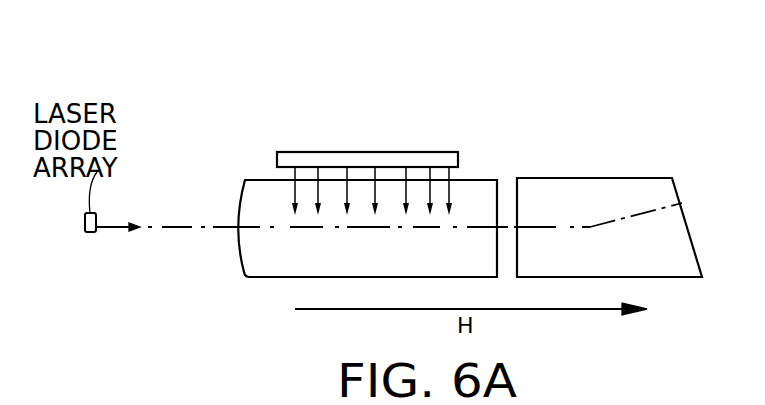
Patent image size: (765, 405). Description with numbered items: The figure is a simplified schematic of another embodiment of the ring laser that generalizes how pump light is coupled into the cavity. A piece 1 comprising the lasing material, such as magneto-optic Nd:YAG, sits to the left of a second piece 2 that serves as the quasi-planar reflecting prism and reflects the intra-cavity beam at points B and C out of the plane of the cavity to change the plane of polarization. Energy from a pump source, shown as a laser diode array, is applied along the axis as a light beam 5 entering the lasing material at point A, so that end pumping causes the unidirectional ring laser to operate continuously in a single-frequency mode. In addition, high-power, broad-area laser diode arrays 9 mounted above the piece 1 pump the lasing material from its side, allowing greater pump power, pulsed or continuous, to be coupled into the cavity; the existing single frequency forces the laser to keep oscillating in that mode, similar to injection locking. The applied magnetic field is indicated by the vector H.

The piece 1 is at (264, 197).
The piece 2 is at (630, 205).
The light beam 5 is at (426, 222).
The laser diode arrays 9 is at (377, 135).